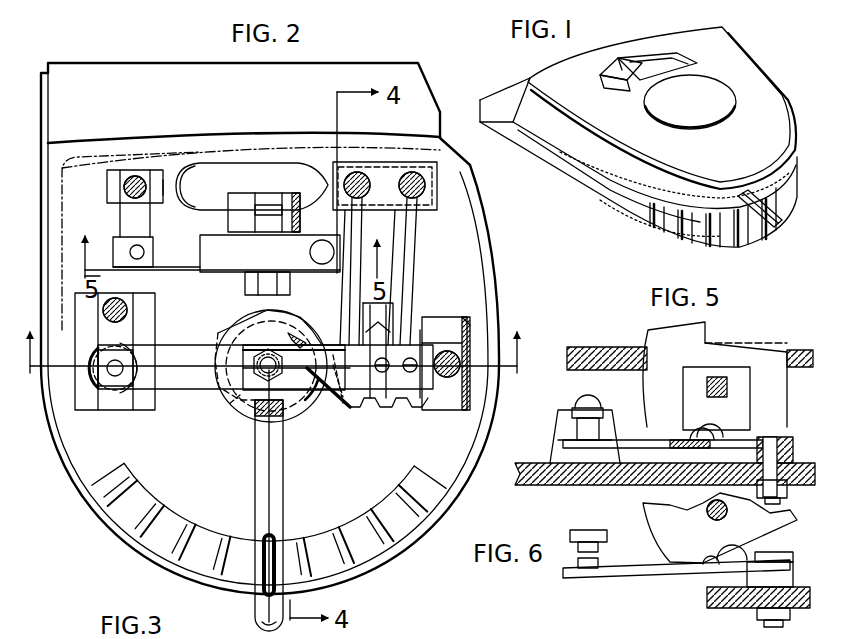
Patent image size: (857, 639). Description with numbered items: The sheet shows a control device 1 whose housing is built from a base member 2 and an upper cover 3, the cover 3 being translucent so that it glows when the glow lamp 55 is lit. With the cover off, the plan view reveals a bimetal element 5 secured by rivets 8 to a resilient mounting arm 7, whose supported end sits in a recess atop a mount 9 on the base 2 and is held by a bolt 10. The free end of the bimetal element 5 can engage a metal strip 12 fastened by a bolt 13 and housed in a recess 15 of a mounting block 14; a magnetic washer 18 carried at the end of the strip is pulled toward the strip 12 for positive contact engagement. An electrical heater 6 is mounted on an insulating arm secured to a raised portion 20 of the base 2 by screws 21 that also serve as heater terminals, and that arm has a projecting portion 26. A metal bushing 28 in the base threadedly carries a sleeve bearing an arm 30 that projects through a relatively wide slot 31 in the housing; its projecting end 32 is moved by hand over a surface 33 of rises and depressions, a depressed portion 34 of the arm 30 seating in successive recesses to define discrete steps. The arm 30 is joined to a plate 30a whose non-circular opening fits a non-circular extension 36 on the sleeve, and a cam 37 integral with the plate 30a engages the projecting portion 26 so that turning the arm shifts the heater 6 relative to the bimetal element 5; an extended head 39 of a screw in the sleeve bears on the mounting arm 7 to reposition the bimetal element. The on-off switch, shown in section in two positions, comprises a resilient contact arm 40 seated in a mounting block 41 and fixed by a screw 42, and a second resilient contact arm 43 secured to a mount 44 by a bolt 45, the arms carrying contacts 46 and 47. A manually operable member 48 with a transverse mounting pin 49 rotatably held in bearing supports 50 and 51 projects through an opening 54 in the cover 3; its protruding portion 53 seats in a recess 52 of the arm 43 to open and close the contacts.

In FIG. 2, the control device 1 is at (95, 518).
In FIG. 1, the control device 1 is at (622, 188).
In FIG. 2, the base member 2 is at (215, 481).
In FIG. 1, the base member 2 is at (752, 232).
In FIG. 5, the base member 2 is at (640, 485).
In FIG. 6, the base member 2 is at (758, 613).
In FIG. 2, the upper cover 3 is at (272, 269).
In FIG. 1, the upper cover 3 is at (617, 127).
In FIG. 5, the upper cover 3 is at (567, 355).
In FIG. 2, the bimetal element 5 is at (188, 375).
In FIG. 2, the electrical heater 6 is at (395, 266).
In FIG. 2, the resilient mounting arm 7 is at (316, 388).
In FIG. 2, the rivets 8 is at (410, 376).
In FIG. 2, the mount 9 is at (446, 331).
In FIG. 2, the bolt 10 is at (447, 378).
In FIG. 2, the metal strip 12 is at (112, 405).
In FIG. 2, the bolt 13 is at (135, 305).
In FIG. 2, the mounting block 14 is at (143, 337).
In FIG. 2, the recess 15 is at (98, 325).
In FIG. 2, the magnetic washer 18 is at (98, 393).
In FIG. 2, the raised portion 20 is at (437, 198).
In FIG. 2, the screws 21 is at (408, 172).
In FIG. 2, the projecting portion 26 is at (342, 412).
In FIG. 2, the metal bushing 28 is at (250, 323).
In FIG. 2, the arm 30 is at (315, 471).
In FIG. 2, the plate 30a is at (243, 395).
In FIG. 1, the slot 31 is at (694, 201).
In FIG. 2, the projecting end 32 is at (280, 624).
In FIG. 1, the projecting end 32 is at (782, 222).
In FIG. 2, the surface 33 is at (178, 543).
In FIG. 1, the surface 33 is at (700, 228).
In FIG. 2, the depressed portion 34 is at (272, 548).
In FIG. 2, the non-circular extension 36 is at (258, 412).
In FIG. 2, the cam 37 is at (302, 343).
In FIG. 2, the extended head 39 is at (243, 350).
In FIG. 2, the resilient contact arm 40 is at (150, 218).
In FIG. 5, the resilient contact arm 40 is at (578, 408).
In FIG. 6, the resilient contact arm 40 is at (578, 530).
In FIG. 2, the mounting block 41 is at (157, 186).
In FIG. 5, the mounting block 41 is at (608, 418).
In FIG. 2, the screw 42 is at (137, 178).
In FIG. 5, the screw 42 is at (588, 390).
In FIG. 2, the resilient contact arm 43 is at (189, 262).
In FIG. 5, the resilient contact arm 43 is at (640, 440).
In FIG. 6, the resilient contact arm 43 is at (648, 576).
In FIG. 5, the mount 44 is at (790, 437).
In FIG. 6, the mount 44 is at (772, 583).
In FIG. 5, the bolt 45 is at (787, 487).
In FIG. 5, the contact 46 is at (572, 435).
In FIG. 6, the contact 46 is at (598, 547).
In FIG. 5, the contact 47 is at (568, 441).
In FIG. 6, the contact 47 is at (598, 562).
In FIG. 1, the manually operable member 48 is at (627, 62).
In FIG. 5, the manually operable member 48 is at (672, 335).
In FIG. 5, the transverse mounting pin 49 is at (722, 375).
In FIG. 6, the transverse mounting pin 49 is at (712, 516).
In FIG. 2, the bearing support 50 is at (300, 218).
In FIG. 2, the bearing support 51 is at (290, 285).
In FIG. 5, the recess 52 is at (712, 445).
In FIG. 6, the recess 52 is at (705, 572).
In FIG. 5, the protruding portion 53 is at (718, 433).
In FIG. 6, the protruding portion 53 is at (755, 556).
In FIG. 1, the opening 54 is at (690, 58).
In FIG. 5, the opening 54 is at (785, 350).
In FIG. 2, the glow lamp 55 is at (236, 163).